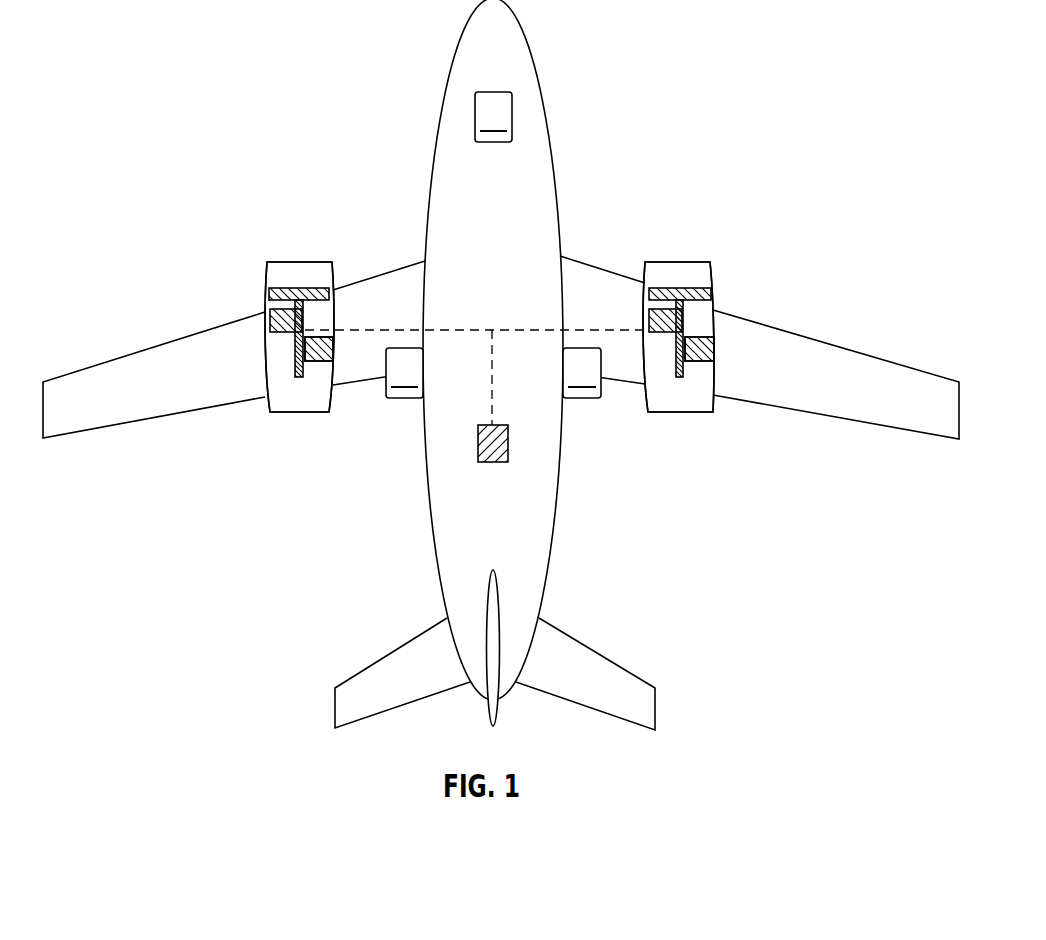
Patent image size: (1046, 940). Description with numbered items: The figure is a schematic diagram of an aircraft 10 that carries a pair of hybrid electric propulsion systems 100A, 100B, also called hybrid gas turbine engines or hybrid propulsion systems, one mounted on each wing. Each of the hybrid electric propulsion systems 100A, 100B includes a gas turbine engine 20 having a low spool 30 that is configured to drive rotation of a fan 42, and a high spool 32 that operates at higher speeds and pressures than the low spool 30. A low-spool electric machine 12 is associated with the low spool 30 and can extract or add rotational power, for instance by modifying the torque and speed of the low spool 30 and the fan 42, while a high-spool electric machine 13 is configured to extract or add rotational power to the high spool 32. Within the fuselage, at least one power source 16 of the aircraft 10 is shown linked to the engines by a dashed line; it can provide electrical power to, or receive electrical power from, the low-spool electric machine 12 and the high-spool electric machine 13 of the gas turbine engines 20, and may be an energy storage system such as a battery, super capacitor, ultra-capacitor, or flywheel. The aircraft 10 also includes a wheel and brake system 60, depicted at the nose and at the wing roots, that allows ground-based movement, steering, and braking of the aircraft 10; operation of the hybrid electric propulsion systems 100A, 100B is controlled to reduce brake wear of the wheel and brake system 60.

The aircraft 10 is at (390, 108).
The hybrid electric propulsion system 100A is at (248, 273).
The hybrid electric propulsion system 100B is at (733, 268).
The low-spool electric machine 12 is at (272, 318).
The high-spool electric machine 13 is at (333, 352).
The power source 16 is at (492, 463).
The gas turbine engine 20 is at (308, 400).
The low spool 30 is at (305, 325).
The high spool 32 is at (297, 372).
The fan 42 is at (300, 290).
The wheel and brake system 60 is at (493, 245).